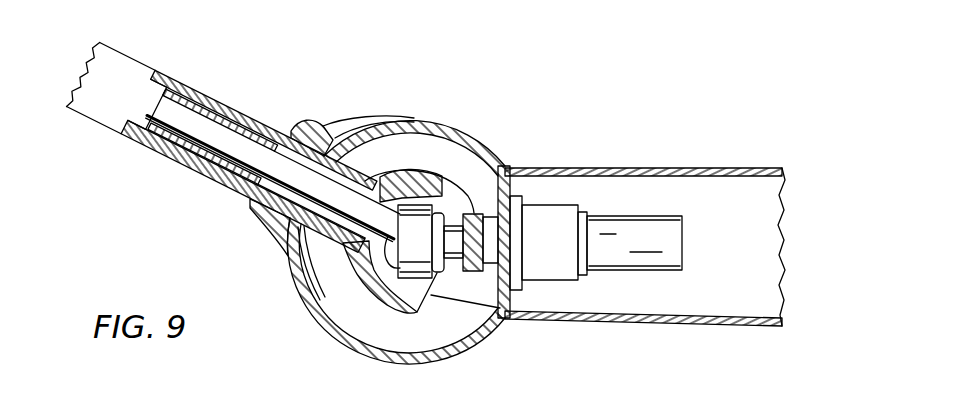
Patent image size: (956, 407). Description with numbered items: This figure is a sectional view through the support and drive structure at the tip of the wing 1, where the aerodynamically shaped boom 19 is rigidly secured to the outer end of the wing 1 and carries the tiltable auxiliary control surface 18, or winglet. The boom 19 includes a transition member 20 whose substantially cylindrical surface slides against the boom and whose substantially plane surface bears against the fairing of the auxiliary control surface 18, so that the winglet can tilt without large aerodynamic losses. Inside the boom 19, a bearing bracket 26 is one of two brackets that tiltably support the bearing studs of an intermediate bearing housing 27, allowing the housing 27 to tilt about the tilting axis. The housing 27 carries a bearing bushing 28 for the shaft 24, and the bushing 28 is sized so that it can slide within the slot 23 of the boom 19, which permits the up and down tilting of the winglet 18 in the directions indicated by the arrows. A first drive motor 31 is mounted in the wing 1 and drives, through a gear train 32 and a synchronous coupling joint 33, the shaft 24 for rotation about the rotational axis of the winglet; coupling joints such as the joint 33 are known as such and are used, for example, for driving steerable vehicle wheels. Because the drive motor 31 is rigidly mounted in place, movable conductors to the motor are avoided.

The wing 1 is at (623, 172).
The auxiliary control surface 18 is at (127, 67).
The boom 19 is at (465, 137).
The transition member 20 is at (327, 129).
The slot 23 is at (300, 252).
The shaft 24 is at (246, 154).
The bearing bracket 26 is at (455, 290).
The intermediate bearing housing 27 is at (363, 274).
The bearing bushing 28 is at (397, 178).
The first drive motor 31 is at (677, 236).
The gear train 32 is at (563, 251).
The synchronous coupling joint 33 is at (427, 250).